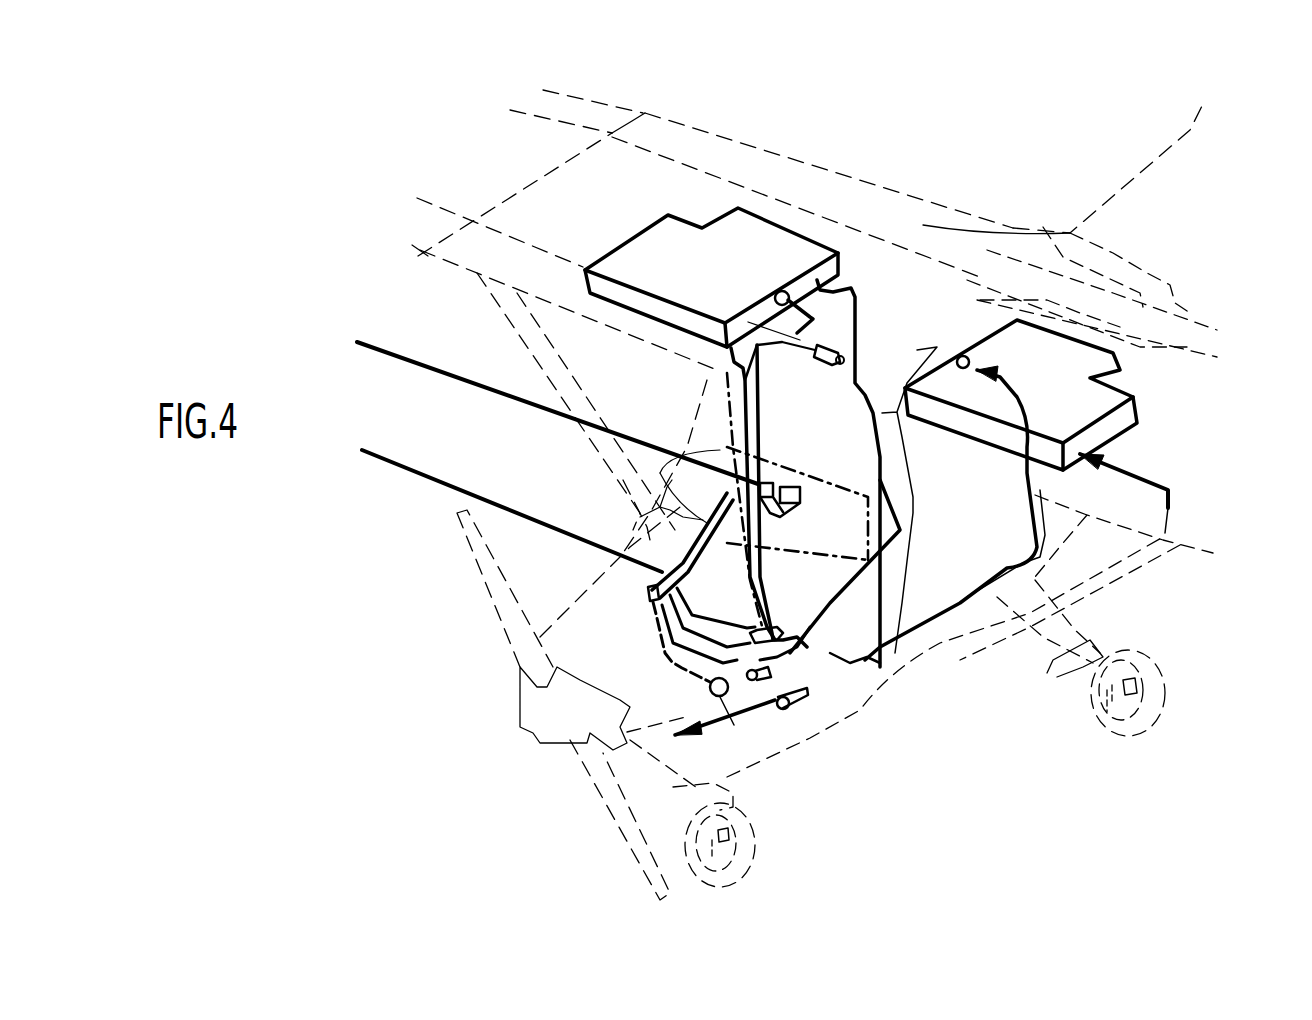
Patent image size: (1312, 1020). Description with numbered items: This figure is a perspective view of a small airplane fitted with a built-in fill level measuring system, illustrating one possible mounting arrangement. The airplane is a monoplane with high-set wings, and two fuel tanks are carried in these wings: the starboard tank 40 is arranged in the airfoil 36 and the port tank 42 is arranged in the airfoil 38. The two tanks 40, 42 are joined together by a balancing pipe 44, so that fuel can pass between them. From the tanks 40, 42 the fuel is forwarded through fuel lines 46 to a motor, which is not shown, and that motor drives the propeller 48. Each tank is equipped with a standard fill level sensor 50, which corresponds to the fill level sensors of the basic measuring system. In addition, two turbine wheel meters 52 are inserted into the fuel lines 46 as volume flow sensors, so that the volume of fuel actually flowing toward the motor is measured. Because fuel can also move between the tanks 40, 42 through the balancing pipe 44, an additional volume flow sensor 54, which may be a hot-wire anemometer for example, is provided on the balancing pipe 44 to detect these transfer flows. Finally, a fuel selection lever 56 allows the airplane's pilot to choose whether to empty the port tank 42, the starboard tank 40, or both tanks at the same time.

The airfoil 36 is at (647, 140).
The airfoil 38 is at (1180, 323).
The starboard tank 40 is at (743, 253).
The port tank 42 is at (1120, 378).
The balancing pipe 44 is at (873, 367).
The fuel lines 46 is at (813, 627).
The propeller 48 is at (623, 828).
The fill level sensors 50 is at (790, 300).
The turbine wheel meters 52 is at (760, 670).
The volume flow sensor 54 is at (827, 348).
The fuel selection lever 56 is at (707, 687).